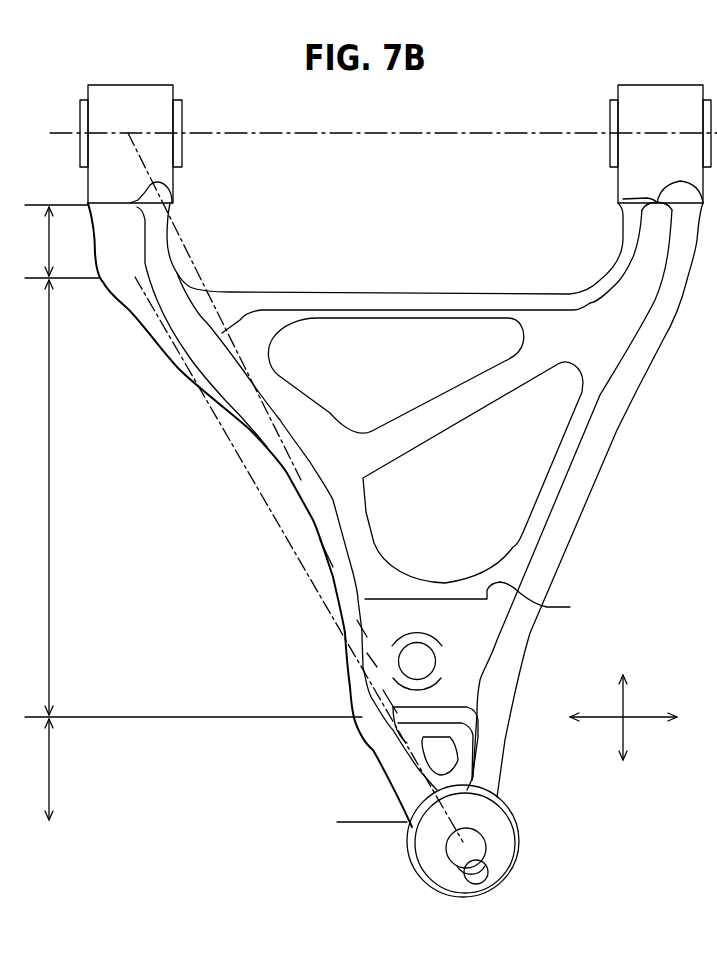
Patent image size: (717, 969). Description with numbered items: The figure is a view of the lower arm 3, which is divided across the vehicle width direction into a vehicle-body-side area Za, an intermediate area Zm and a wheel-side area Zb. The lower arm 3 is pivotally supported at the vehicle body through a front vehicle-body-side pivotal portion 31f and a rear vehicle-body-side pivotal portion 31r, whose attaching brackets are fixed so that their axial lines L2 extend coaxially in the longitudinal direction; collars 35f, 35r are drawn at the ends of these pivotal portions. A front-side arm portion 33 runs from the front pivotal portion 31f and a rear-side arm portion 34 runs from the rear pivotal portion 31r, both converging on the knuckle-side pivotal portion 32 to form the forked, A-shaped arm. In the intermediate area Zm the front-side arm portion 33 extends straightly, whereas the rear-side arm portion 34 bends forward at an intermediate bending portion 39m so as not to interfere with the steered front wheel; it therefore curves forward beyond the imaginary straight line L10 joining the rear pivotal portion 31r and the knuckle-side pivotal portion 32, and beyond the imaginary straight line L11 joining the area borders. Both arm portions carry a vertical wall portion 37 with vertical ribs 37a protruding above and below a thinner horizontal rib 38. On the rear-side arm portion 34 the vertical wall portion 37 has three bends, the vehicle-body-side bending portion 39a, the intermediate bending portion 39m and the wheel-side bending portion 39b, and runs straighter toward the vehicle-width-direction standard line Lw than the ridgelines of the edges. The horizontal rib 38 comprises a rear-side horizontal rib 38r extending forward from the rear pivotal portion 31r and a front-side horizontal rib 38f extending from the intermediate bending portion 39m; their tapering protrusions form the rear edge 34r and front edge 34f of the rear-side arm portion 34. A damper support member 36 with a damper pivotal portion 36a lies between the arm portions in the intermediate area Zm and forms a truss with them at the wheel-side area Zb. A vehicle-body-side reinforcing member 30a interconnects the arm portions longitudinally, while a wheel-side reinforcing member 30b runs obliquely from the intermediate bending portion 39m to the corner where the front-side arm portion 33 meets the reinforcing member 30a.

The lower arm 3 is at (562, 86).
The rear vehicle-body-side pivotal portion 31r is at (143, 85).
The front vehicle-body-side pivotal portion 31f is at (617, 92).
The rear collar 35r is at (182, 120).
The front collar 35f is at (610, 152).
The knuckle-side pivotal portion 32 is at (518, 863).
The front-side arm portion 33 is at (585, 510).
The rear-side arm portion 34 is at (334, 578).
The rear edge 34r is at (272, 450).
The front edge 34f is at (307, 400).
The damper support member 36 is at (570, 607).
The damper pivotal portion 36a is at (437, 665).
The vertical wall portion 37 is at (613, 443).
The vertical rib 37a is at (213, 373).
The horizontal rib 38 is at (560, 443).
The rear-side horizontal rib 38r is at (103, 282).
The front-side horizontal rib 38f is at (328, 420).
The vehicle-body-side reinforcing member 30a is at (395, 293).
The wheel-side reinforcing member 30b is at (447, 388).
The vehicle-body-side bending portion 39a is at (117, 313).
The wheel-side bending portion 39b is at (342, 735).
The intermediate bending portion 39m is at (267, 520).
The axial line L2 is at (306, 140).
The imaginary straight line L10 is at (194, 268).
The imaginary straight line L11 is at (240, 475).
The vehicle-body-side area Za is at (62, 241).
The intermediate area Zm is at (190, 498).
The wheel-side area Zb is at (215, 770).
The vehicle-width-direction standard line Lw is at (630, 728).